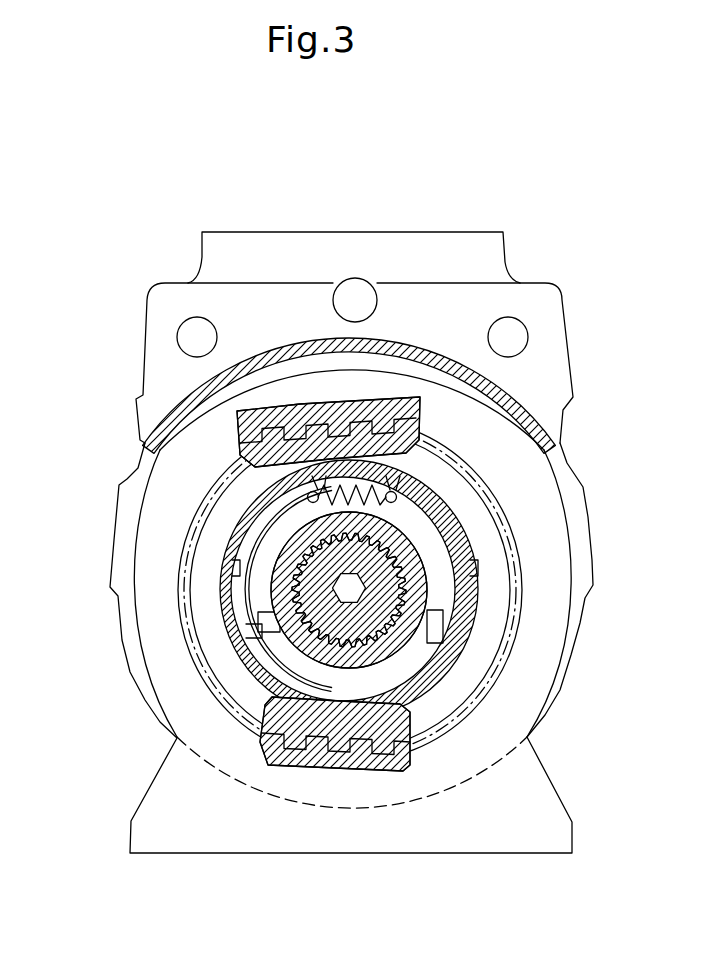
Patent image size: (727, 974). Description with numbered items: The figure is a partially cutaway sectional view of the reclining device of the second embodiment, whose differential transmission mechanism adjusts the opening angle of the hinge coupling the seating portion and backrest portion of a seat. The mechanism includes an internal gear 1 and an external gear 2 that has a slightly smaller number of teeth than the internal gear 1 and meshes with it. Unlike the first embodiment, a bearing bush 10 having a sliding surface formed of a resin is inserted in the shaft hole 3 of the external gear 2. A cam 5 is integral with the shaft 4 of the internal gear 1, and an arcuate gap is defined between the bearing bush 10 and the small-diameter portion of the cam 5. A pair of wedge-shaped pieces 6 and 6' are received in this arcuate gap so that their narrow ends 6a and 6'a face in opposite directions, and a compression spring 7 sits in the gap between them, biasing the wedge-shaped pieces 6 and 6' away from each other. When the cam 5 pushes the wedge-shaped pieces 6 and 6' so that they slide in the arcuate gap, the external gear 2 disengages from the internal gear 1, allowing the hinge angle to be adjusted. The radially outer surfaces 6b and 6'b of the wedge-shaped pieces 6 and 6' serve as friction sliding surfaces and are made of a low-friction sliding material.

The internal gear 1 is at (420, 402).
The external gear 2 is at (405, 452).
The shaft hole 3 is at (468, 620).
The shaft 4 is at (395, 640).
The cam 5 is at (418, 699).
The wedge-shaped piece 6 is at (283, 590).
The narrow end of wedge-shaped piece 6a is at (262, 624).
The radially outer surface of wedge-shaped piece 6b is at (235, 568).
The wedge-shaped piece 6' is at (428, 589).
The narrow end of wedge-shaped piece 6'a is at (531, 642).
The radially outer surface of wedge-shaped piece 6'b is at (559, 568).
The compression spring 7 is at (300, 488).
The bearing bush 10 is at (262, 633).